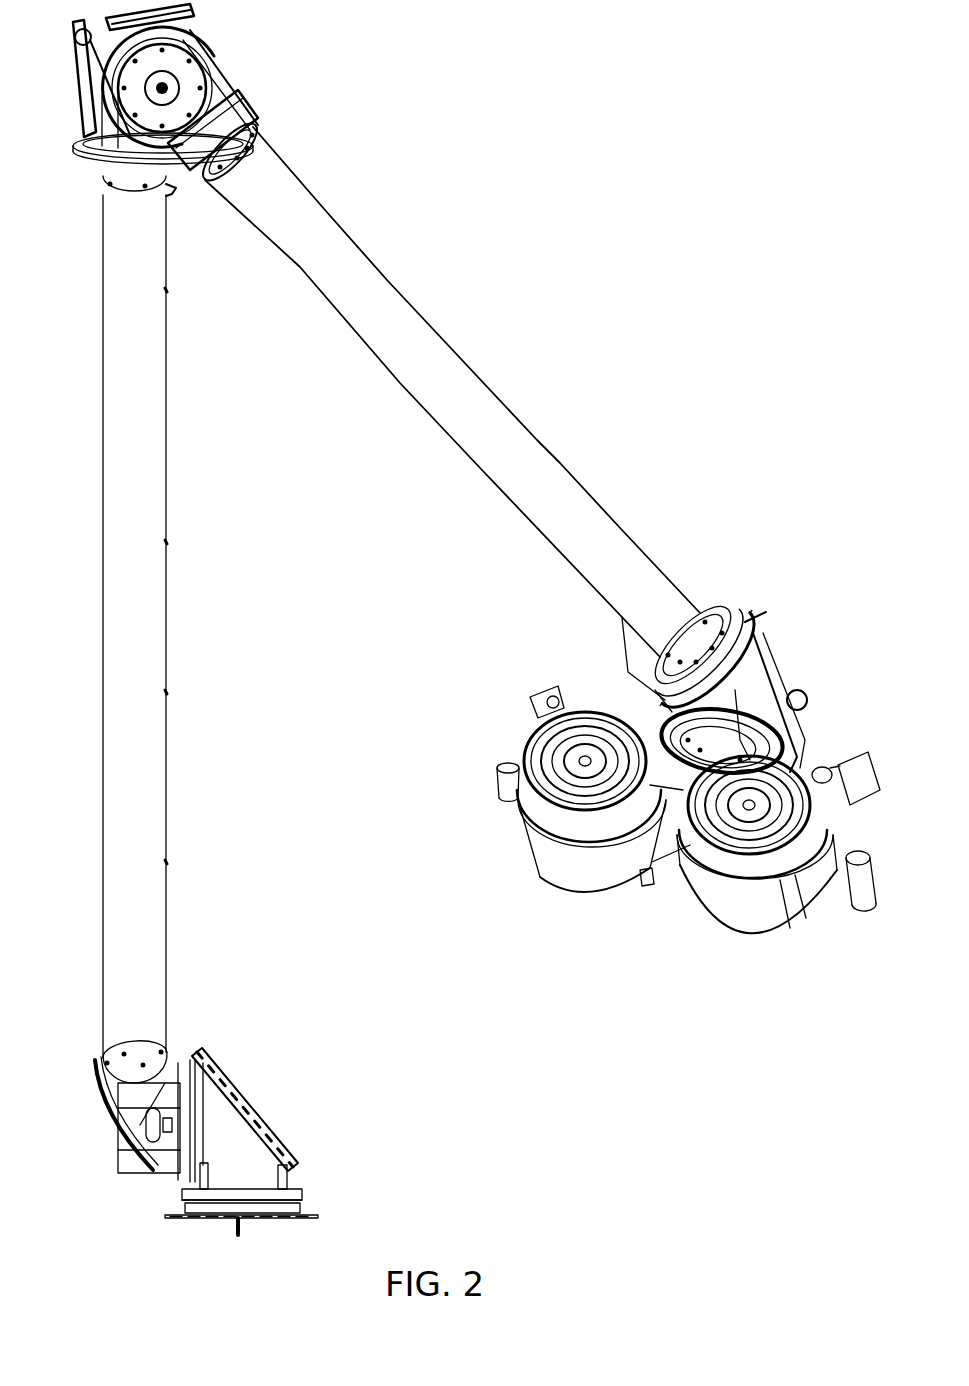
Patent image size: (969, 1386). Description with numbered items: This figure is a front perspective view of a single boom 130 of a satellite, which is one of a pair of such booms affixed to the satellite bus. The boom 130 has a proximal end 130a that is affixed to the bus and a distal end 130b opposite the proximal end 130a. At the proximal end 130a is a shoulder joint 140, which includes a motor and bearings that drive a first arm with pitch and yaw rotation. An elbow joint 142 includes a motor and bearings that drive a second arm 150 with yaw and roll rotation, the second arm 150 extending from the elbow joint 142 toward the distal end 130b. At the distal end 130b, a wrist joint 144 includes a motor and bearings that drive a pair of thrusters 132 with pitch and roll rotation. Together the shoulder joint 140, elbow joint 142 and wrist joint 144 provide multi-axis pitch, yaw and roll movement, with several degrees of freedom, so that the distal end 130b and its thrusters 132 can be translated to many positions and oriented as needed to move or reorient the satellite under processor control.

The boom 130 is at (680, 162).
The proximal end 130a is at (288, 1284).
The distal end 130b is at (750, 556).
The thruster 132 is at (522, 745).
The shoulder joint 140 is at (232, 1080).
The elbow joint 142 is at (198, 42).
The wrist joint 144 is at (742, 610).
The second arm 150 is at (435, 343).